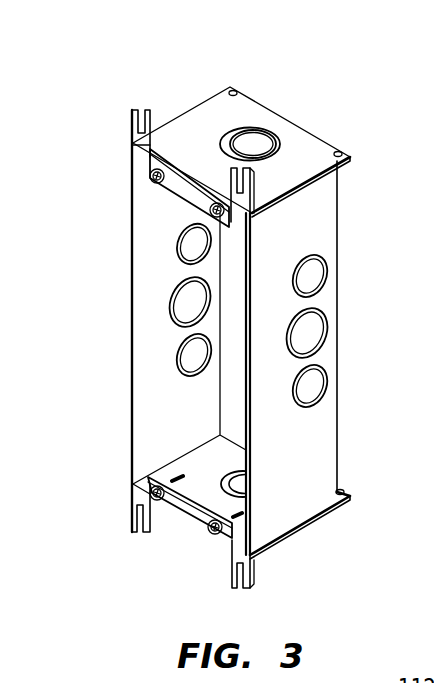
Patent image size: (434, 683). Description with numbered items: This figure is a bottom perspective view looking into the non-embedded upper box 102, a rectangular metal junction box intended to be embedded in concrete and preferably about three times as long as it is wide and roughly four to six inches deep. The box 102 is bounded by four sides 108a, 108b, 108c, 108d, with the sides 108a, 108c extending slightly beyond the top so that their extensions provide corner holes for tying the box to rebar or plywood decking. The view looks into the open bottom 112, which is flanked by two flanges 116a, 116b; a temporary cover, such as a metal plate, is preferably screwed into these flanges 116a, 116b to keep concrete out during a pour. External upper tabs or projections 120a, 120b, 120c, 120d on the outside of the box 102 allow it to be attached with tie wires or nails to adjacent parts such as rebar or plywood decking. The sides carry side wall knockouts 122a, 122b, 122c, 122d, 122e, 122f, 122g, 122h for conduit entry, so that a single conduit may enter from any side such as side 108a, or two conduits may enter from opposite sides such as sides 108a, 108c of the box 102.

The upper box 102 is at (243, 66).
The side 108a is at (197, 133).
The side 108b is at (313, 225).
The side 108c is at (193, 467).
The side 108d is at (150, 203).
The open bottom 112 is at (162, 410).
The flange 116a is at (188, 189).
The flange 116b is at (188, 508).
The external upper tab 120a is at (132, 112).
The external upper tab 120b is at (253, 188).
The external upper tab 120c is at (233, 580).
The external upper tab 120d is at (133, 517).
The side wall knockout 122a is at (253, 144).
The side wall knockout 122b is at (310, 274).
The side wall knockout 122c is at (308, 333).
The side wall knockout 122d is at (313, 384).
The side wall knockout 122e is at (250, 510).
The side wall knockout 122f is at (180, 248).
The side wall knockout 122g is at (187, 305).
The side wall knockout 122h is at (190, 358).